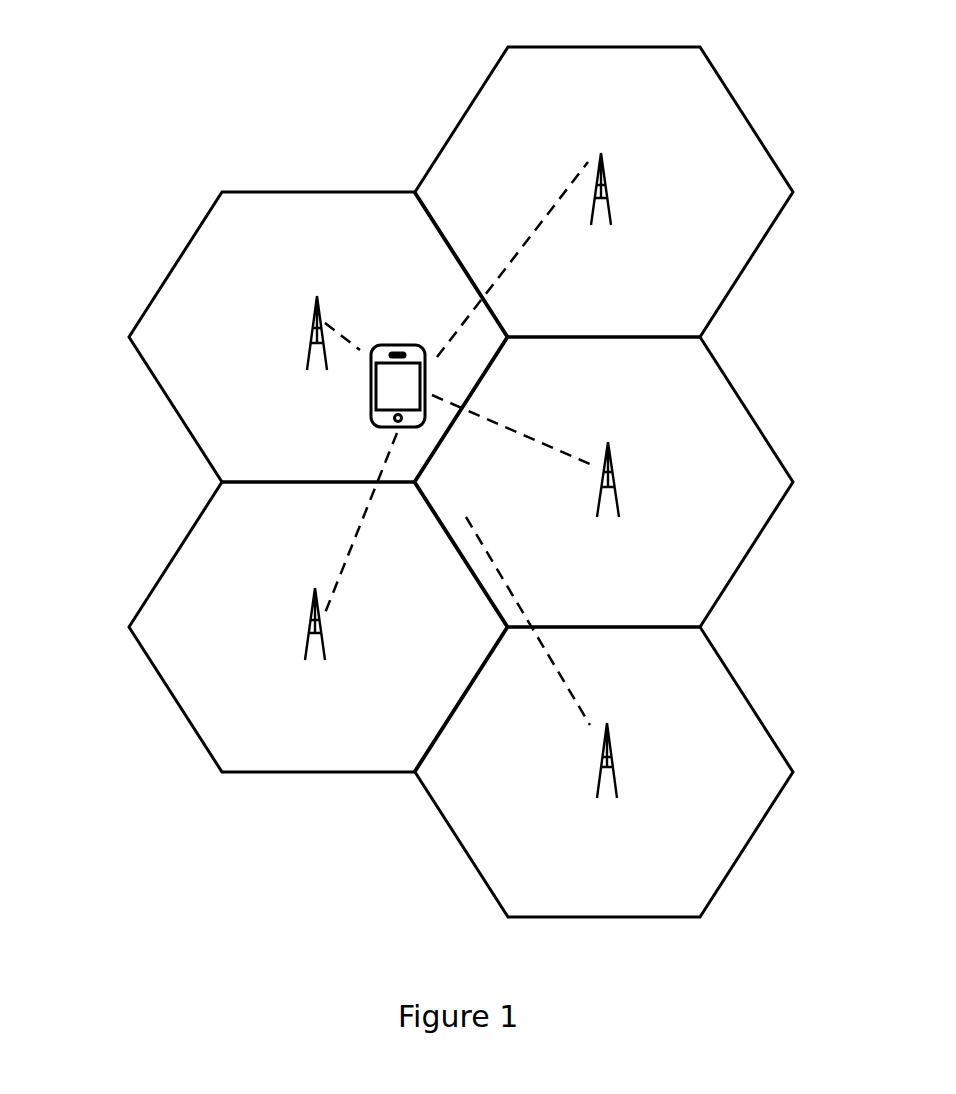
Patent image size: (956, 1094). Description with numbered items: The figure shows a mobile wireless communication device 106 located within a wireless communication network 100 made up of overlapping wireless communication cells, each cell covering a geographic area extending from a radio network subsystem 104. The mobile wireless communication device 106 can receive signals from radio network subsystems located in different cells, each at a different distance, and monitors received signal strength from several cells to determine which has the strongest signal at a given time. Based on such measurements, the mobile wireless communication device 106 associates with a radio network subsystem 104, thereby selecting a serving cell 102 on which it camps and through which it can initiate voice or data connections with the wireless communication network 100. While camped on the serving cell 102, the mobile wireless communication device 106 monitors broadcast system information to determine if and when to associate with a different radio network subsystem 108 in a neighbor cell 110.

The wireless communication network 100 is at (122, 78).
The serving cell 102 is at (203, 223).
The radio network subsystem 104 is at (329, 312).
The mobile wireless communication device 106 is at (371, 384).
The radio network subsystem 108 is at (619, 457).
The neighbor cell 110 is at (730, 383).